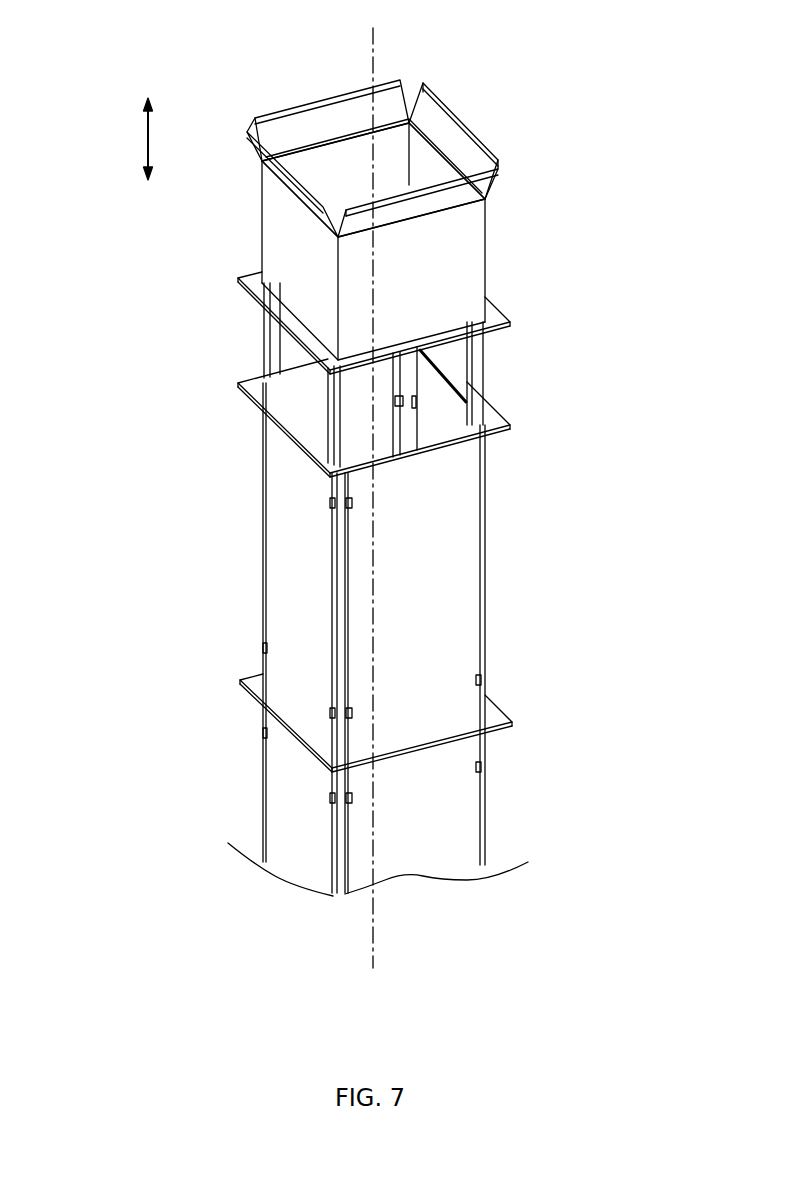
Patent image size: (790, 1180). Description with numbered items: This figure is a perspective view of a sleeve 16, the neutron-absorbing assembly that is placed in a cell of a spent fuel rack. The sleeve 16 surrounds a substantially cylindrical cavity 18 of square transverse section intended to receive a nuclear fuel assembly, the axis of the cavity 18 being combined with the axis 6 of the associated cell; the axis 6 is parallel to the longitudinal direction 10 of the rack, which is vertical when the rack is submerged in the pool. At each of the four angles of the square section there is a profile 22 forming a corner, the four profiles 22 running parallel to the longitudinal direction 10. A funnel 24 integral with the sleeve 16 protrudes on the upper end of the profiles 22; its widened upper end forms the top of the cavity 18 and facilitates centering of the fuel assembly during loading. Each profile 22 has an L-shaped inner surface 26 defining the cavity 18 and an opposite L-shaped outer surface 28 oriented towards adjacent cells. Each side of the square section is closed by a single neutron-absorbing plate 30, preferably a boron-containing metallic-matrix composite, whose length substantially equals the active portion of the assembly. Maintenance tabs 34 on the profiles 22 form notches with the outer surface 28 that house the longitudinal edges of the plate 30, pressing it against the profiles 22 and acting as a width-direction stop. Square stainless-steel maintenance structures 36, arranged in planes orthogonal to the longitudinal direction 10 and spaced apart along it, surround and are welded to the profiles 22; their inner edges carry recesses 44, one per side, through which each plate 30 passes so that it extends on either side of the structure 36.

The axis 6 is at (373, 58).
The longitudinal direction 10 is at (146, 140).
The sleeve 16 is at (548, 209).
The cavity 18 is at (423, 168).
The profile 22 is at (256, 319).
The funnel 24 is at (305, 128).
The inner surface 26 is at (402, 350).
The outer surface 28 is at (268, 348).
The neutron-absorbing plate 30 is at (302, 403).
The maintenance tab 34 is at (262, 740).
The maintenance structure 36 is at (493, 320).
The recess 44 is at (287, 702).